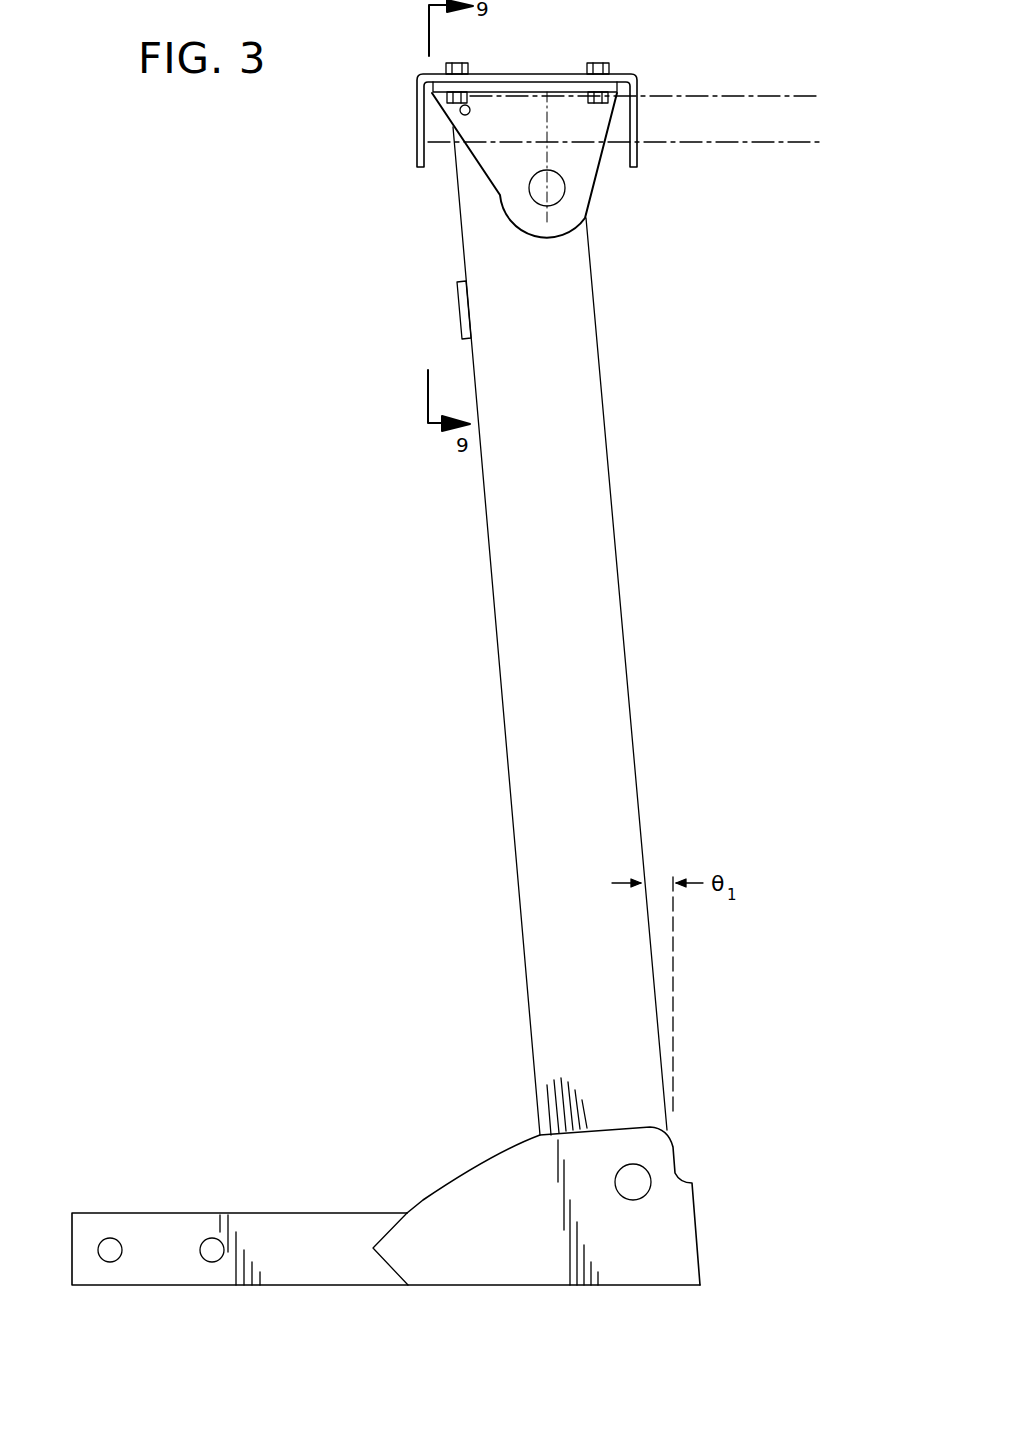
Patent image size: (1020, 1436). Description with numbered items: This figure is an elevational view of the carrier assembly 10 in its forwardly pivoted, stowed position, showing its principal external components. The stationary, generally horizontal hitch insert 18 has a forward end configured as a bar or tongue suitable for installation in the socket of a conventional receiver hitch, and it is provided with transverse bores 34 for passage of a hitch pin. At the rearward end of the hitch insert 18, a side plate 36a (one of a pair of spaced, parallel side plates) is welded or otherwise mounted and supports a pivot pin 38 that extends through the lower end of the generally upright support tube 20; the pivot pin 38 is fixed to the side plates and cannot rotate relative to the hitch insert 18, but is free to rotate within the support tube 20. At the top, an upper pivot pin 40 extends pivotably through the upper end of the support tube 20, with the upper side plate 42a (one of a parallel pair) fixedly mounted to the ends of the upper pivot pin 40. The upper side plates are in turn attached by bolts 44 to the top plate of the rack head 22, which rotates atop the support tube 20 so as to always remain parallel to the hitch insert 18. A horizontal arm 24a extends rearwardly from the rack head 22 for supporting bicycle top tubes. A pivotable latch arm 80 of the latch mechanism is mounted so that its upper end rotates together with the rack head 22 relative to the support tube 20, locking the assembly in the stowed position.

The carrier assembly 10 is at (393, 548).
The hitch insert 18 is at (273, 1218).
The support tube 20 is at (510, 663).
The rack head 22 is at (418, 110).
The horizontal arm 24a is at (720, 95).
The transverse bores 34 is at (200, 1248).
The side plate 36a is at (457, 1202).
The pivot pin 38 is at (648, 1180).
The upper pivot pin 40 is at (529, 189).
The upper side plate 42a is at (587, 168).
The bolts 44 is at (457, 63).
The latch arm 80 is at (460, 298).